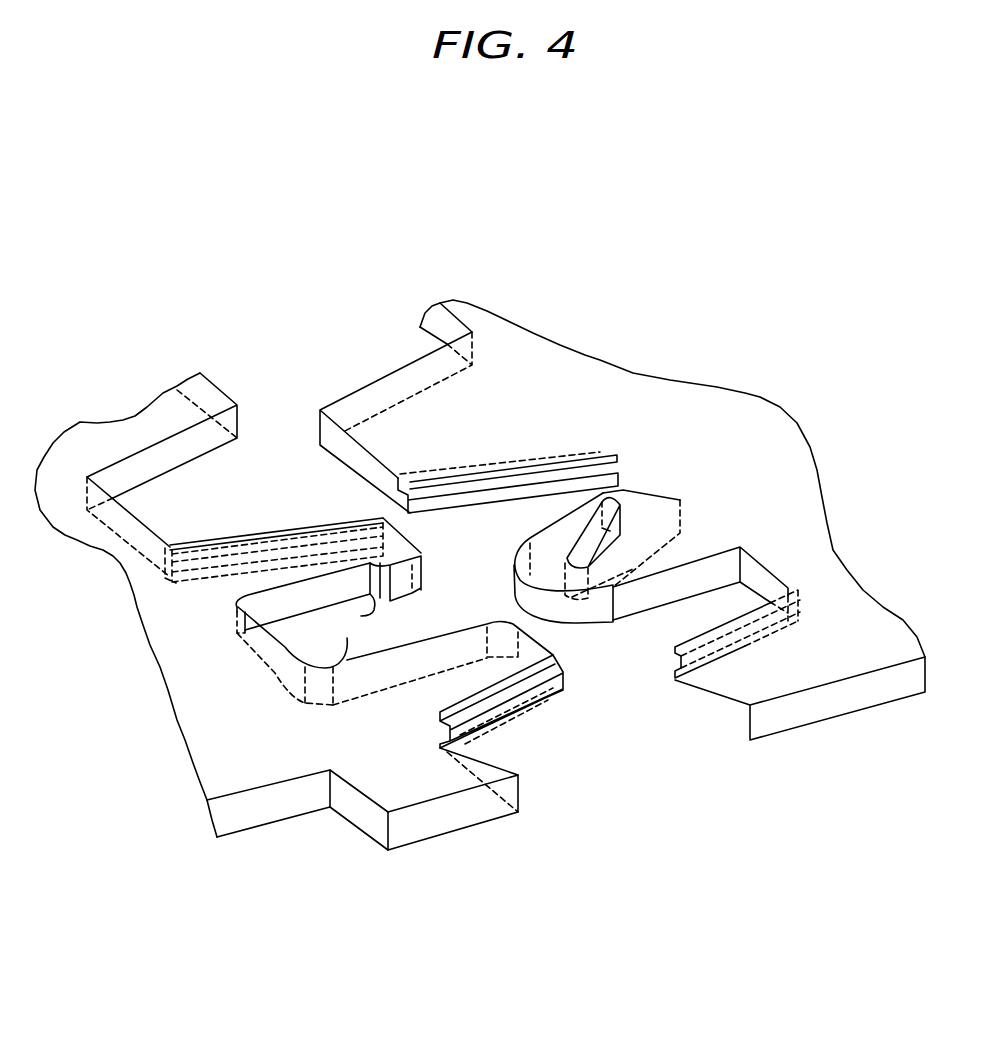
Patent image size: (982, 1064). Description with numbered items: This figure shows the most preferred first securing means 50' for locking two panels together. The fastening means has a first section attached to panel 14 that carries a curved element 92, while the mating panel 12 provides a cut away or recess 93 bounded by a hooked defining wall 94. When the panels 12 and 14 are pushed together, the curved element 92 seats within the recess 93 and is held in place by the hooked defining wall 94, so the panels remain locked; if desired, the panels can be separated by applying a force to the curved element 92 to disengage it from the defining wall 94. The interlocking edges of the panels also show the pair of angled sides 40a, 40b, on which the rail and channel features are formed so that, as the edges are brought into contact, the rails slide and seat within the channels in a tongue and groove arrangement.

The panel 12 is at (80, 447).
The panel 14 is at (492, 337).
The angled side 40a is at (593, 465).
The angled side 40b is at (220, 557).
The first securing means 50' is at (338, 247).
The curved element 92 is at (603, 507).
The recess 93 is at (340, 638).
The hooked defining wall 94 is at (382, 580).